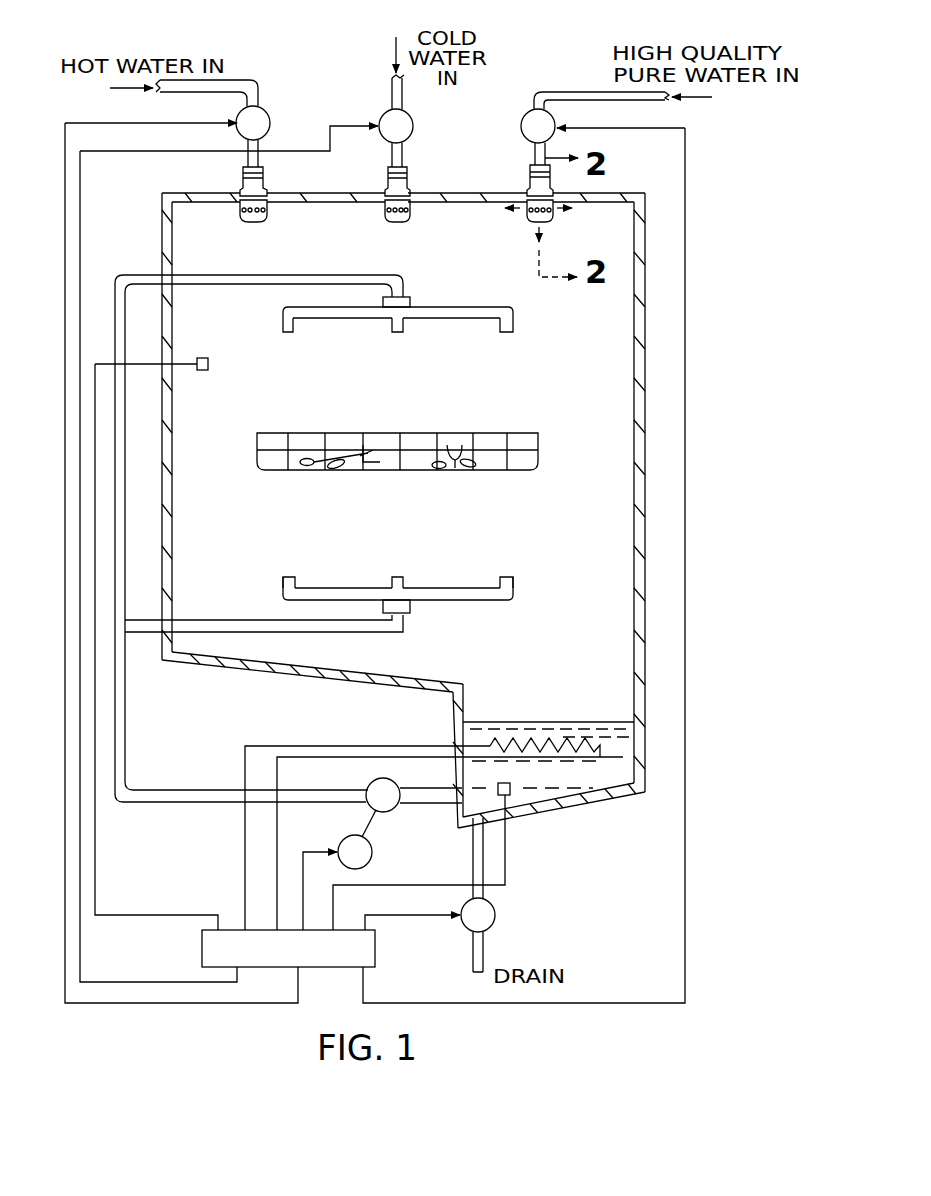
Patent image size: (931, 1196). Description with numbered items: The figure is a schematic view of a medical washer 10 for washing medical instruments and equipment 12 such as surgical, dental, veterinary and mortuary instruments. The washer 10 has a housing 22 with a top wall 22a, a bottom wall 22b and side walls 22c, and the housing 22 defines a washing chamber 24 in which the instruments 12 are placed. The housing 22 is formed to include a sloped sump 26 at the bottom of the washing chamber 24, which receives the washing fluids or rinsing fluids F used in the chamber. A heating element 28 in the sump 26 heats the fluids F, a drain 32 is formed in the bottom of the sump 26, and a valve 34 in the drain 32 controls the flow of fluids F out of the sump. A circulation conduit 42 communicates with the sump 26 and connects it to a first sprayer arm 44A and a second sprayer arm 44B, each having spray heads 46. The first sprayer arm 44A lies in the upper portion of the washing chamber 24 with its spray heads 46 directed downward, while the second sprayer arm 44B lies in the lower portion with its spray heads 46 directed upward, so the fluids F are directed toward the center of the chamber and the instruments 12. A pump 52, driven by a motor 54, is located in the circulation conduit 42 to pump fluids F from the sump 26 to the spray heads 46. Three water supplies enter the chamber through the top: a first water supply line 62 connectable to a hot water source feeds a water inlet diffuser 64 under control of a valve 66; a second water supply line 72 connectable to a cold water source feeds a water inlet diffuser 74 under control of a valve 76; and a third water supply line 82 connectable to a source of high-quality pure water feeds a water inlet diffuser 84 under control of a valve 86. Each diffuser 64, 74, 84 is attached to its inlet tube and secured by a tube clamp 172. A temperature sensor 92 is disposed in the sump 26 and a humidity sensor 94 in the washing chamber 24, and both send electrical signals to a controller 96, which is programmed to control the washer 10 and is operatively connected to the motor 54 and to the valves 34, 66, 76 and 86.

The medical washer 10 is at (717, 232).
The medical instruments and equipment 12 is at (357, 468).
The housing 22 is at (456, 492).
The top wall 22a is at (433, 203).
The bottom wall 22b is at (318, 676).
The side walls 22c is at (165, 503).
The washing chamber 24 is at (573, 402).
The sloped sump 26 is at (555, 805).
The heating element 28 is at (543, 740).
The drain 32 is at (473, 850).
The valve 34 is at (495, 917).
The circulation conduit 42 is at (155, 803).
The first sprayer arm 44A is at (341, 322).
The second sprayer arm 44B is at (345, 585).
The spray heads 46 is at (287, 335).
The pump 52 is at (395, 812).
The motor 54 is at (338, 832).
The first water supply line 62 is at (210, 85).
The water inlet diffuser 64 is at (250, 222).
The valve 66 is at (263, 112).
The second water supply line 72 is at (392, 93).
The water inlet diffuser 74 is at (385, 222).
The valve 76 is at (414, 123).
The third water supply line 82 is at (605, 100).
The water inlet diffuser 84 is at (553, 224).
The valve 86 is at (522, 135).
The temperature sensor 92 is at (510, 797).
The humidity sensor 94 is at (203, 372).
The controller 96 is at (202, 943).
The tube clamp 172 is at (258, 176).
The washing fluids or rinsing fluids F is at (572, 785).